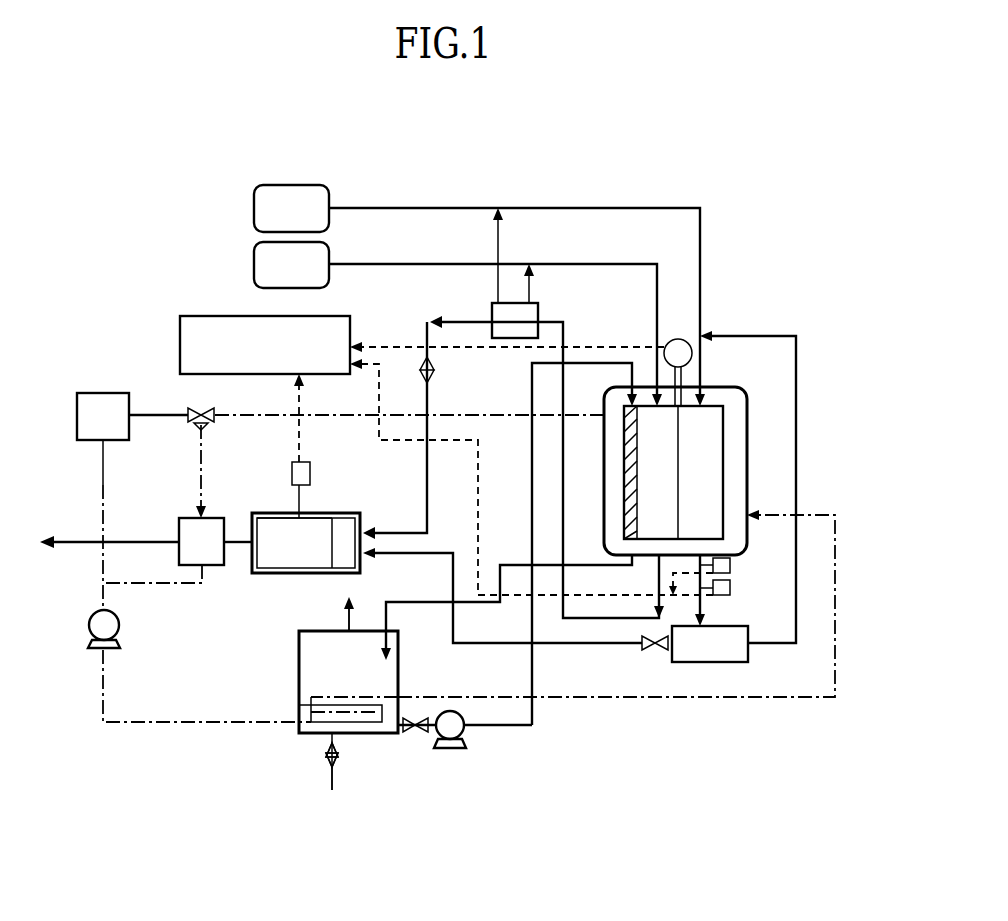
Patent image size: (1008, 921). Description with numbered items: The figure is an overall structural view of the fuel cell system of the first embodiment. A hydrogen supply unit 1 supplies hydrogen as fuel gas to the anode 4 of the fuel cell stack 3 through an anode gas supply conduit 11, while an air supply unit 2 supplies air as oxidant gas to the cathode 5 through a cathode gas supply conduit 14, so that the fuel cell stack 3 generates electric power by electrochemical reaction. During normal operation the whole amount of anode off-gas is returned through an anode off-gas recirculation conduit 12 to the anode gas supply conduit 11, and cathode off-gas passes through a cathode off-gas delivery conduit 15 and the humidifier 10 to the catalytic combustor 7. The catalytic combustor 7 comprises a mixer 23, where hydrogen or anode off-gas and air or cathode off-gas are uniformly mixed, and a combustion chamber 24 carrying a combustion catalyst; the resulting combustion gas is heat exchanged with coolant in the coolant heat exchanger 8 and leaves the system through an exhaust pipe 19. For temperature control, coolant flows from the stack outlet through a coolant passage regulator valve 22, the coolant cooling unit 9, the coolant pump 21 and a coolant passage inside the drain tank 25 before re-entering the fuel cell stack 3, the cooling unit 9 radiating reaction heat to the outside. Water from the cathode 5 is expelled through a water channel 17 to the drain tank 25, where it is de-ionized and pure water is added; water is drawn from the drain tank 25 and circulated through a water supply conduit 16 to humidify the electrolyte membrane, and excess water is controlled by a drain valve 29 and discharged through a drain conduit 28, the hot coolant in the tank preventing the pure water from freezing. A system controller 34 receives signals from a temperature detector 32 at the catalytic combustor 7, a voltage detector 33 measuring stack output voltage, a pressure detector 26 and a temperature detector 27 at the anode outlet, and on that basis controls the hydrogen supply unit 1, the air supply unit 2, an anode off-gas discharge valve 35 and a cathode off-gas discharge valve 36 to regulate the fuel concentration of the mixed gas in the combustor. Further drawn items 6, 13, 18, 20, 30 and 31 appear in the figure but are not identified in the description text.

The hydrogen supply unit 1 is at (254, 207).
The air supply unit 2 is at (254, 262).
The fuel cell stack 3 is at (744, 390).
The anode 4 is at (724, 480).
The cathode 5 is at (640, 447).
The drain unit 6 is at (748, 660).
The catalytic combustor 7 is at (360, 525).
The coolant heat exchanger 8 is at (179, 525).
The coolant cooling unit 9 is at (103, 393).
The humidifier 10 is at (538, 314).
The anode gas supply conduit 11 is at (700, 232).
The anode off-gas recirculation conduit 12 is at (770, 336).
The drain line 13 is at (595, 643).
The cathode gas supply conduit 14 is at (580, 264).
The cathode off-gas delivery conduit 15 is at (563, 610).
The water supply conduit 16 is at (532, 460).
The water channel 17 is at (632, 500).
The circulation pump 18 is at (465, 740).
The exhaust pipe 19 is at (58, 545).
The supply line 20 is at (203, 724).
The coolant pump 21 is at (119, 625).
The coolant passage regulator valve 22 is at (195, 408).
The mixer 23 is at (347, 513).
The combustion chamber 24 is at (270, 518).
The drain tank 25 is at (398, 680).
The pressure detector 26 is at (731, 565).
The temperature detector 27 is at (731, 588).
The drain conduit 28 is at (332, 782).
The drain valve 29 is at (326, 752).
The vent 30 is at (347, 612).
The valve 31 is at (412, 735).
The temperature detector 32 is at (312, 472).
The voltage detector 33 is at (678, 339).
The system controller 34 is at (352, 324).
The anode off-gas discharge valve 35 is at (652, 650).
The cathode off-gas discharge valve 36 is at (436, 373).